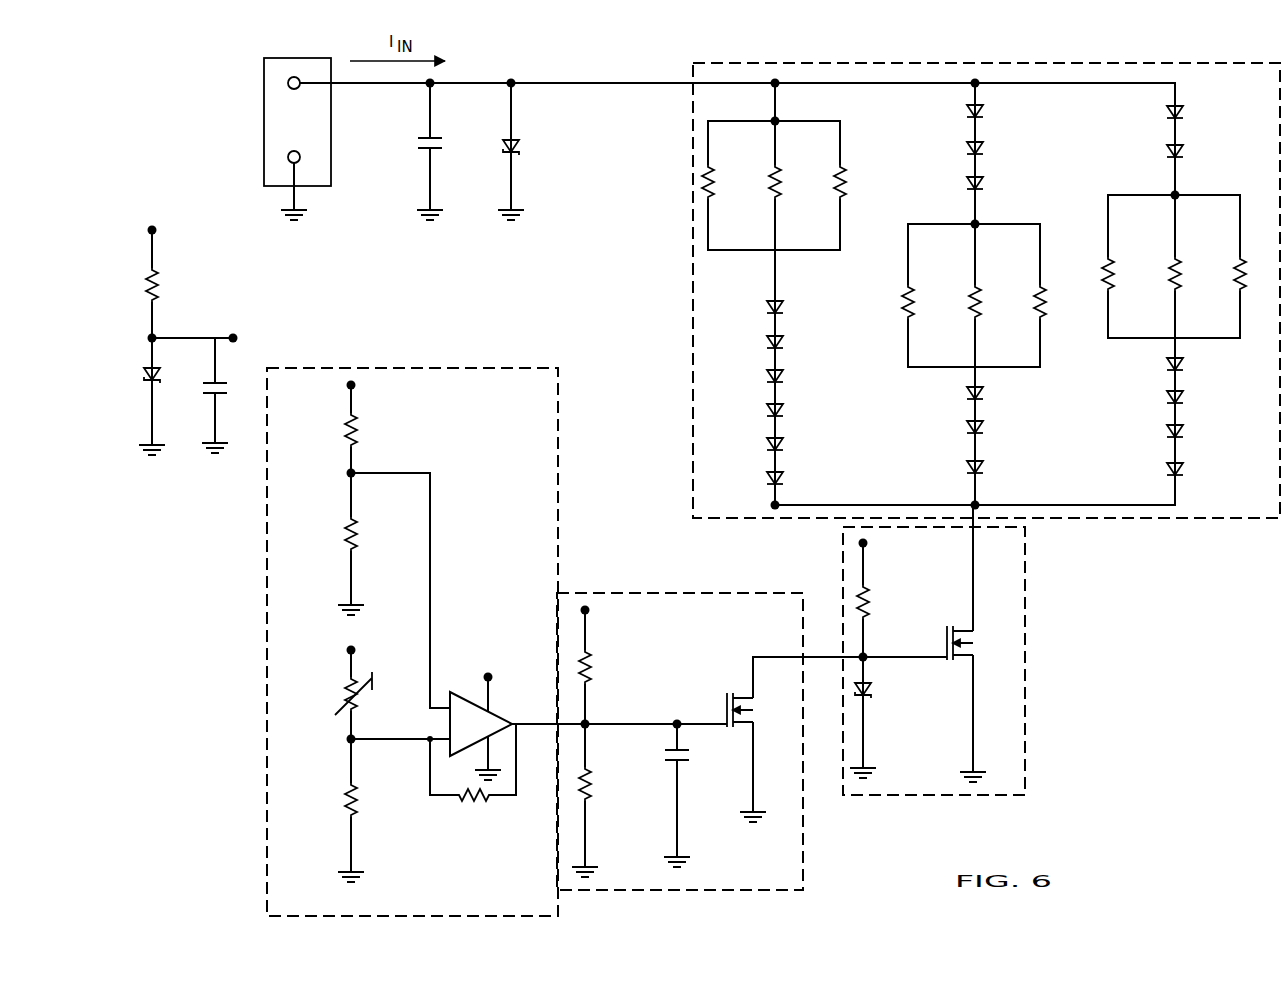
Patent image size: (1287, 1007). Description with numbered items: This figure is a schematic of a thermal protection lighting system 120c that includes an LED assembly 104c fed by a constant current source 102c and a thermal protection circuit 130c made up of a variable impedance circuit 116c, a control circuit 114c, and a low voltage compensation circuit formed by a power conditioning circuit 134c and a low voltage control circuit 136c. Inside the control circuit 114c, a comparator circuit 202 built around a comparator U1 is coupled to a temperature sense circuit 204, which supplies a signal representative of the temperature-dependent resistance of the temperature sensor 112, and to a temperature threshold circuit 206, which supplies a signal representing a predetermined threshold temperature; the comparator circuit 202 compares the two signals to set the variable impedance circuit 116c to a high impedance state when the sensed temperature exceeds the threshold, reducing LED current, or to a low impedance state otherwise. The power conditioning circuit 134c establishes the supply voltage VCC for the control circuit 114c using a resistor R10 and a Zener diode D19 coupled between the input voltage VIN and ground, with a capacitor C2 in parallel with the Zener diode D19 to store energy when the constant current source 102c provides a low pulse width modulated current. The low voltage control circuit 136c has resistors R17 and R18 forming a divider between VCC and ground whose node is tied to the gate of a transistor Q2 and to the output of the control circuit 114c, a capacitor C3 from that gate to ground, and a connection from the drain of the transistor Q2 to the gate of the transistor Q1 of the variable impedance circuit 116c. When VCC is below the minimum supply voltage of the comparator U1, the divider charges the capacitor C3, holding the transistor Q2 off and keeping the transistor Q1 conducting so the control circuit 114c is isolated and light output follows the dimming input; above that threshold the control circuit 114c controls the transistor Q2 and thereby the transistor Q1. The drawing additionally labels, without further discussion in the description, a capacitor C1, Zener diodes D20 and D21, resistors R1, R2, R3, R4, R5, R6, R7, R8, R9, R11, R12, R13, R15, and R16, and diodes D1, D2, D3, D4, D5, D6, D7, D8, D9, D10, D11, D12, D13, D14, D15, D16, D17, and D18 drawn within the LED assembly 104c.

The thermal protection lighting system 120c is at (260, 149).
The constant current source 102c is at (264, 155).
The thermal protection circuit 130c is at (478, 329).
The power conditioning circuit 134c is at (212, 338).
The control circuit 114c is at (560, 426).
The low voltage control circuit 136c is at (655, 593).
The variable impedance circuit 116c is at (1025, 673).
The LED assembly 104c is at (1141, 519).
The temperature threshold circuit 206 is at (363, 542).
The temperature sense circuit 204 is at (378, 762).
The comparator circuit 202 is at (506, 730).
The temperature sensor 112 is at (364, 713).
The comparator U1 is at (459, 676).
The transistor Q1 is at (981, 643).
The transistor Q2 is at (837, 739).
The input capacitor C1 is at (439, 151).
The capacitor C2 is at (225, 417).
The capacitor C3 is at (667, 795).
The Zener diode D19 is at (135, 373).
The zener diode D20 is at (885, 692).
The zener diode D21 is at (524, 151).
The resistor R1 is at (720, 182).
The resistor R2 is at (787, 182).
The resistor R3 is at (852, 182).
The resistor R4 is at (920, 302).
The resistor R5 is at (987, 302).
The resistor R6 is at (1052, 302).
The resistor R7 is at (1120, 274).
The resistor R8 is at (1187, 274).
The resistor R9 is at (1252, 274).
The resistor R10 is at (168, 285).
The resistor R11 is at (879, 602).
The resistor R12 is at (367, 430).
The resistor R13 is at (333, 534).
The resistor R15 is at (332, 800).
The feedback resistor R16 is at (474, 807).
The resistor R17 is at (600, 667).
The resistor R18 is at (600, 784).
The LED D1 is at (794, 306).
The LED D2 is at (794, 341).
The LED D3 is at (794, 375).
The LED D4 is at (794, 409).
The LED D5 is at (794, 443).
The LED D6 is at (794, 477).
The LED D7 is at (992, 111).
The LED D8 is at (992, 148).
The LED D9 is at (992, 183).
The LED D10 is at (997, 393).
The LED D11 is at (997, 427).
The LED D12 is at (997, 466).
The LED D13 is at (1197, 114).
The LED D14 is at (1197, 153).
The LED D15 is at (1197, 365).
The LED D16 is at (1197, 398).
The LED D17 is at (1197, 432).
The LED D18 is at (1197, 469).